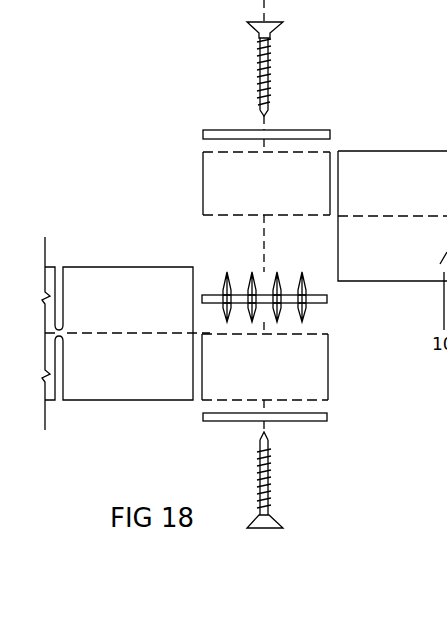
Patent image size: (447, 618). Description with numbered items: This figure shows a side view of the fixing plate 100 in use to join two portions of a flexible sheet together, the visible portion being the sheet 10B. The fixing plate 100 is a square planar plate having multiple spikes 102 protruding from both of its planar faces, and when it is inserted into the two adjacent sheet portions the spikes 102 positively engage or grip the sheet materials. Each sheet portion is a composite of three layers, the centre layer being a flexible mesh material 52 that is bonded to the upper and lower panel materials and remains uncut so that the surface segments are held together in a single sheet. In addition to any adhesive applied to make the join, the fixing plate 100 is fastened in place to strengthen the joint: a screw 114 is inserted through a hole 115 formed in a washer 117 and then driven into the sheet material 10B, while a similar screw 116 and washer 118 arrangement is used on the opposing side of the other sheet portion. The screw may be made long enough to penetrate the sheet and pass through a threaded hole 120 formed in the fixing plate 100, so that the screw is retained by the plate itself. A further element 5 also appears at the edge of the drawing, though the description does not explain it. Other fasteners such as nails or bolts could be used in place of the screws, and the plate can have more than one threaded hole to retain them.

The screw 116 is at (271, 66).
The washer 118 is at (310, 129).
The frame member 5 is at (418, 212).
The flexible sheet 10B is at (87, 278).
The spikes 102 is at (224, 271).
The fixing plate 100 is at (324, 305).
The threaded hole 120 is at (273, 301).
The flexible mesh material 52 is at (209, 338).
The washer 117 is at (298, 424).
The hole 115 is at (257, 424).
The screw 114 is at (271, 487).